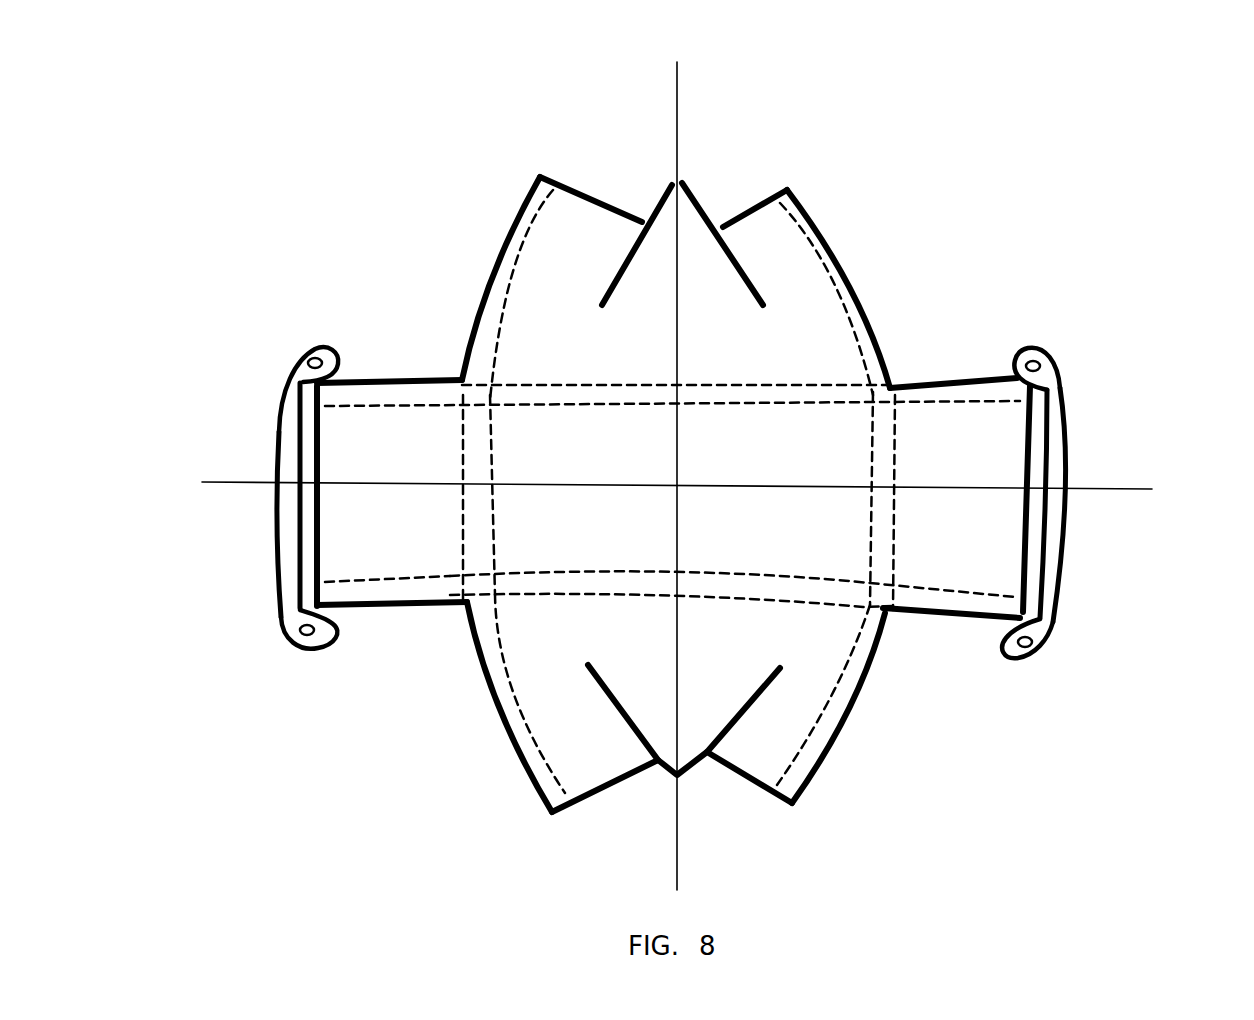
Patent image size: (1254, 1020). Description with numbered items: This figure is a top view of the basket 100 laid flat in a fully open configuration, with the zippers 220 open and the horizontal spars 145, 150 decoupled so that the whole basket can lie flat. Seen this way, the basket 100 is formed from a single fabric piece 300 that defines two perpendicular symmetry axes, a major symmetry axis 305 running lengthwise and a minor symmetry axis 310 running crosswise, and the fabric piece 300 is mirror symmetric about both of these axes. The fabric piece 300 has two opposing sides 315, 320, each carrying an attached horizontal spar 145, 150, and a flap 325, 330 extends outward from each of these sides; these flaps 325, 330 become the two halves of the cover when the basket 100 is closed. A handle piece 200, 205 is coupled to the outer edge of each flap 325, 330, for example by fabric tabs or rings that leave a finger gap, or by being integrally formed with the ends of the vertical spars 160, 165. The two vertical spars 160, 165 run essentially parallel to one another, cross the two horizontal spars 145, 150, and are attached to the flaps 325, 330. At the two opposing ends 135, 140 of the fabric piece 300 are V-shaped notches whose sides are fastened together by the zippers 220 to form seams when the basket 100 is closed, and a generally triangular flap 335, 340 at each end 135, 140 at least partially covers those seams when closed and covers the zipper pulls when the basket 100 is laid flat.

The basket 100 is at (885, 617).
The end of the pouch 135 is at (699, 830).
The end of the pouch 140 is at (696, 114).
The main horizontal spar 145 is at (848, 305).
The main horizontal spar 150 is at (510, 687).
The vertical spar 160 is at (438, 588).
The vertical spar 165 is at (432, 390).
The handle piece 200 is at (283, 428).
The handle piece 205 is at (1063, 420).
The zippers 220 is at (762, 200).
The fabric piece 300 is at (635, 538).
The major symmetry axis 305 is at (677, 72).
The minor symmetry axis 310 is at (1132, 490).
The side of the fabric piece 315 is at (234, 460).
The side of the fabric piece 320 is at (1113, 460).
The flap 325 is at (383, 418).
The flap 330 is at (938, 432).
The triangular flap 335 is at (655, 273).
The triangular flap 340 is at (707, 695).